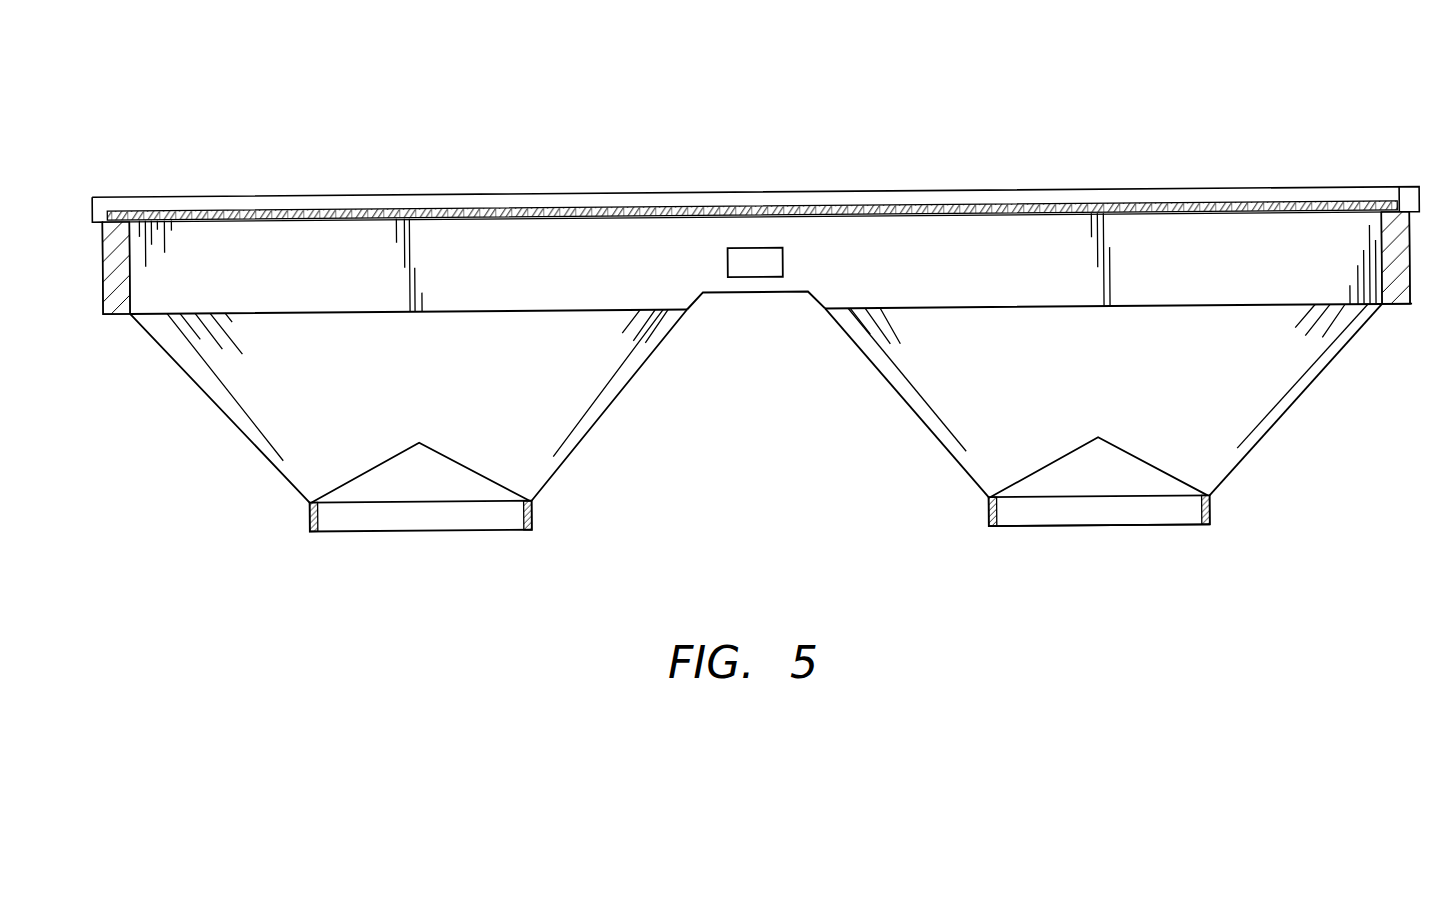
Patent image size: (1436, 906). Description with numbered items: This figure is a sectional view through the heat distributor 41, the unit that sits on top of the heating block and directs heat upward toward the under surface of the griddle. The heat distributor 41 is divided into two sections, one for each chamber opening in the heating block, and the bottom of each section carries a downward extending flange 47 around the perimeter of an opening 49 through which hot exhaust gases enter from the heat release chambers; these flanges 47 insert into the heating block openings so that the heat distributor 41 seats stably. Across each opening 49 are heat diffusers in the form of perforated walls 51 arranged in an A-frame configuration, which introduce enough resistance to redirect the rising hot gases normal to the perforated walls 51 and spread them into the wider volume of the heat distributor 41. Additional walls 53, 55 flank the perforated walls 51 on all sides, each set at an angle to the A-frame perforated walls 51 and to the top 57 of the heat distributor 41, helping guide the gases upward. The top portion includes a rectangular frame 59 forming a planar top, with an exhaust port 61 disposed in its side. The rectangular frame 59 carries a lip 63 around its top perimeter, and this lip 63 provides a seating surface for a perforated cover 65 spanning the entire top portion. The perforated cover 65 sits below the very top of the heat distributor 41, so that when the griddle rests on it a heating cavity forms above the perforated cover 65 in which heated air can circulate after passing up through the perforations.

The heat distributor 41 is at (470, 132).
The downward extending flange 47 is at (1209, 515).
The opening 49 is at (1077, 528).
The perforated walls 51 is at (1058, 458).
The additional wall 53 is at (1270, 375).
The additional wall 55 is at (1247, 453).
The top 57 is at (1335, 188).
The rectangular frame 59 is at (1426, 300).
The exhaust port 61 is at (762, 248).
The lip 63 is at (1389, 236).
The perforated cover 65 is at (1100, 206).